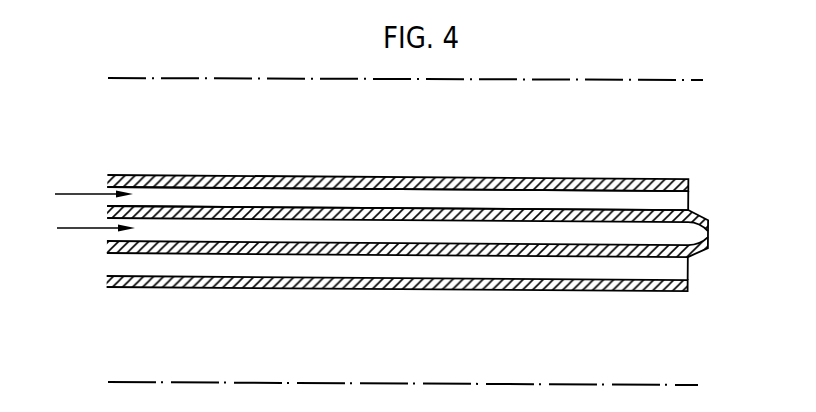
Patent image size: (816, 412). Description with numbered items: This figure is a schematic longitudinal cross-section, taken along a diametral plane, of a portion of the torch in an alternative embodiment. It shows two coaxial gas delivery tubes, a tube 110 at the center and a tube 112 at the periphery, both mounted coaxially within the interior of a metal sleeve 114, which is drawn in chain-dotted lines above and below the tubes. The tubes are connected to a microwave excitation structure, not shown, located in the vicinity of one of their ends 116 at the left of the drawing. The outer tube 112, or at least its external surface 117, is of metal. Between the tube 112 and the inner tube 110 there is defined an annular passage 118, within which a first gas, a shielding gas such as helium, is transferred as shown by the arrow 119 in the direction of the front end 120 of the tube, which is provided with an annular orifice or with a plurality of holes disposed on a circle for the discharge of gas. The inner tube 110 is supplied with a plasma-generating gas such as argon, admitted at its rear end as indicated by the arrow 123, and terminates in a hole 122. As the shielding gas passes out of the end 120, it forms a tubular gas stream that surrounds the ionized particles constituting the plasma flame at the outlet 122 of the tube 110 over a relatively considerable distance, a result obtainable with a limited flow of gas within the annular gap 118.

The tube 110 is at (478, 214).
The tube 112 is at (405, 176).
The metal sleeve 114 is at (230, 78).
The end 116 is at (101, 173).
The external surface 117 is at (287, 183).
The annular passage 118 is at (208, 197).
The arrow 119 is at (78, 193).
The front end 120 is at (689, 194).
The hole 122 is at (708, 233).
The arrow 123 is at (72, 227).